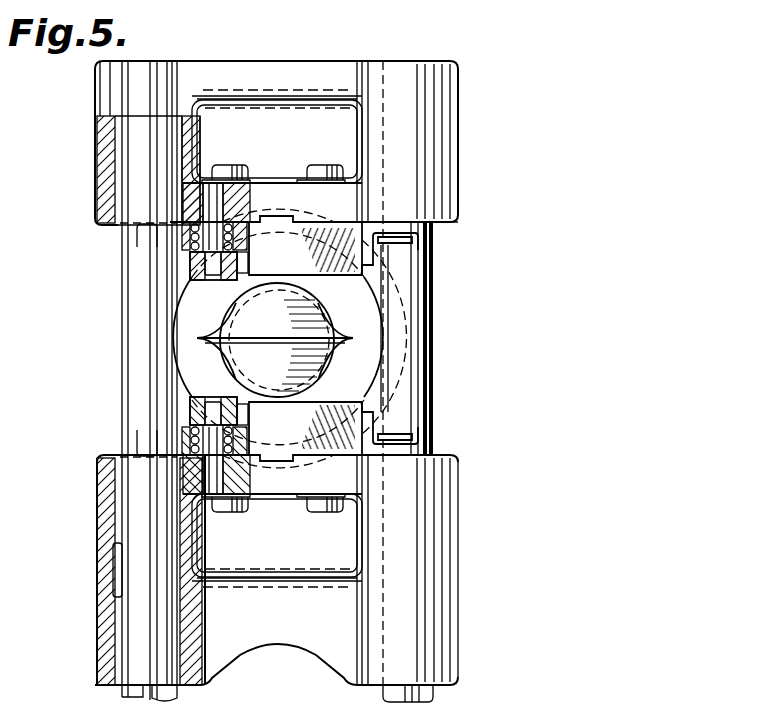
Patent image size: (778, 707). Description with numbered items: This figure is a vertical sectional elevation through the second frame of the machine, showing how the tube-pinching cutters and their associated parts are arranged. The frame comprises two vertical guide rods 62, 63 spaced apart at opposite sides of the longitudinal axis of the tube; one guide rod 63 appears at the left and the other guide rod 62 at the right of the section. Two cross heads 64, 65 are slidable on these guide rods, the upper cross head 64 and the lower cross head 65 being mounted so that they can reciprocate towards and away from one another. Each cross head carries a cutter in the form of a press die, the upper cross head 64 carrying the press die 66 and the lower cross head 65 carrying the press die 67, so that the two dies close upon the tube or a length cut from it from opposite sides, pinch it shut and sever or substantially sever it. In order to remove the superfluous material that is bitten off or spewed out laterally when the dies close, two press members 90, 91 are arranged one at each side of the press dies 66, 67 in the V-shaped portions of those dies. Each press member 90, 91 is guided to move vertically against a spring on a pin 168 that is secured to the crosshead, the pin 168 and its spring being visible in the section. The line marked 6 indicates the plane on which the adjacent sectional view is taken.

The section line 6- 6 is at (488, 142).
The vertical guide rod 62 is at (425, 342).
The vertical guide rod 63 is at (135, 349).
The cross head 64 is at (425, 192).
The cross head 65 is at (440, 477).
The press die 66 is at (308, 270).
The press die 67 is at (362, 404).
The press member 90 is at (190, 398).
The press member 91 is at (342, 400).
The pin 168 is at (208, 470).